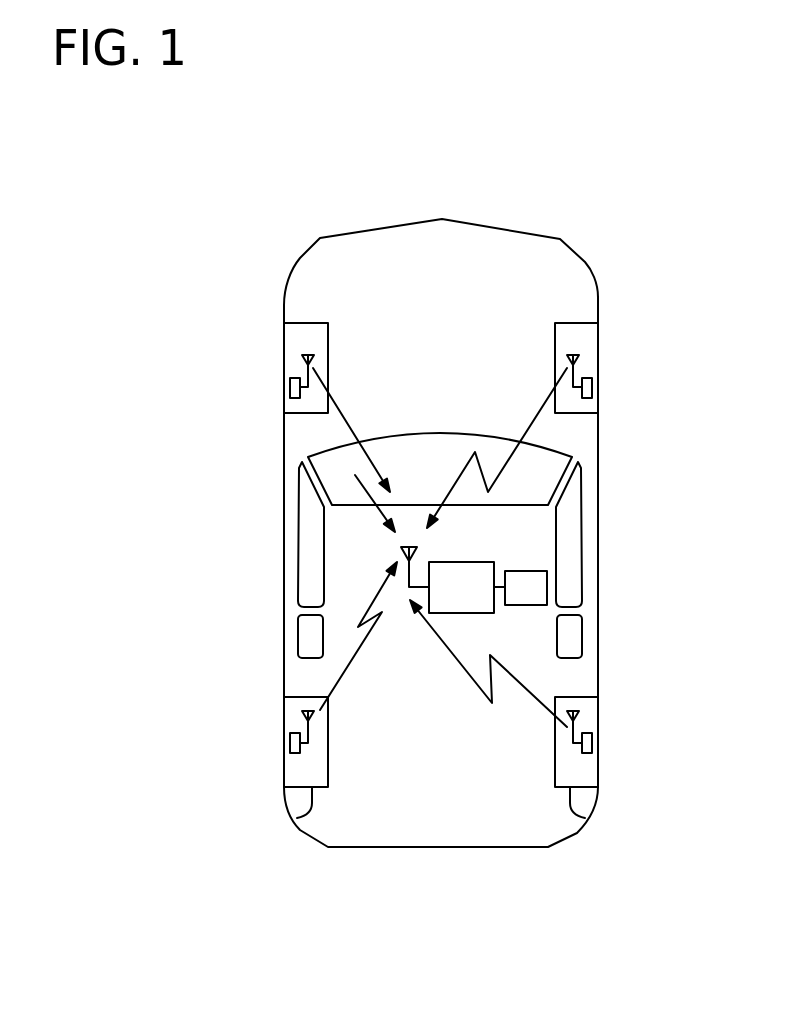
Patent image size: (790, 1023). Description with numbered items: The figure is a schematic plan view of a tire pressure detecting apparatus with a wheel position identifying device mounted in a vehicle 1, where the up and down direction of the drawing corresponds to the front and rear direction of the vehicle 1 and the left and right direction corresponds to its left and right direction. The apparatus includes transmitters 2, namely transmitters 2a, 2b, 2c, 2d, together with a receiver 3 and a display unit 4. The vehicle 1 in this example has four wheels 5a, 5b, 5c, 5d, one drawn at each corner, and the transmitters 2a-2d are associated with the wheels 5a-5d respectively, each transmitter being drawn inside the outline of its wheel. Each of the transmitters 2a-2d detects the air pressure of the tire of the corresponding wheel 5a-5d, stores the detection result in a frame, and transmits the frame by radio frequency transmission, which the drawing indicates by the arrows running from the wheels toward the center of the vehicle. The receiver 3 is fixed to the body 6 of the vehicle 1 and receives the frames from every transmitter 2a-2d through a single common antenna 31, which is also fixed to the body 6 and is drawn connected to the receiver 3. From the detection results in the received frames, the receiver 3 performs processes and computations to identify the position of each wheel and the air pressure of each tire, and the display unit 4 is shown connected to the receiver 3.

The vehicle 1 is at (538, 231).
The transmitters 2 is at (588, 374).
The transmitter 2a is at (592, 388).
The transmitter 2b is at (290, 388).
The transmitter 2c is at (593, 740).
The transmitter 2d is at (290, 743).
The receiver 3 is at (473, 561).
The antenna 31 is at (418, 550).
The display unit 4 is at (525, 605).
The wheel 5a is at (573, 323).
The wheel 5b is at (307, 323).
The wheel 5c is at (584, 814).
The wheel 5d is at (305, 815).
The body 6 is at (598, 463).